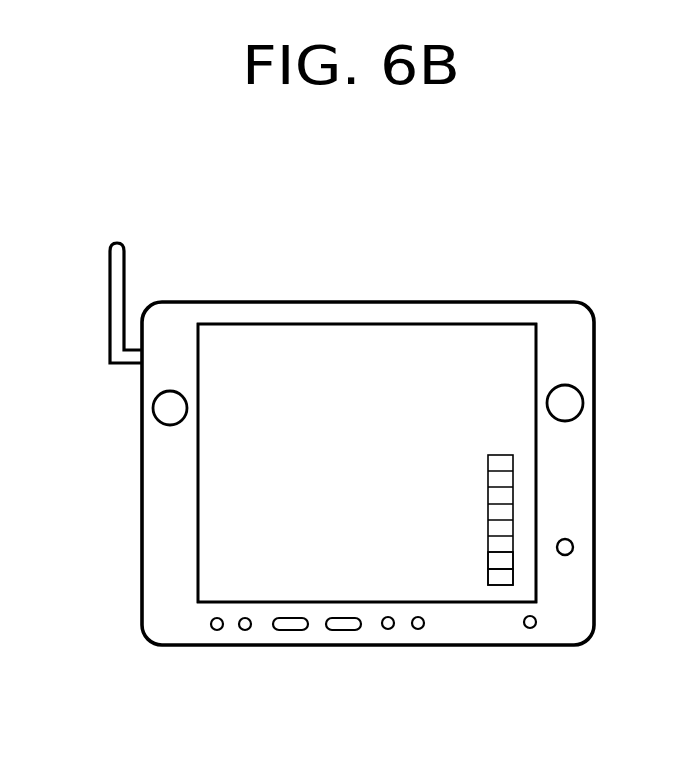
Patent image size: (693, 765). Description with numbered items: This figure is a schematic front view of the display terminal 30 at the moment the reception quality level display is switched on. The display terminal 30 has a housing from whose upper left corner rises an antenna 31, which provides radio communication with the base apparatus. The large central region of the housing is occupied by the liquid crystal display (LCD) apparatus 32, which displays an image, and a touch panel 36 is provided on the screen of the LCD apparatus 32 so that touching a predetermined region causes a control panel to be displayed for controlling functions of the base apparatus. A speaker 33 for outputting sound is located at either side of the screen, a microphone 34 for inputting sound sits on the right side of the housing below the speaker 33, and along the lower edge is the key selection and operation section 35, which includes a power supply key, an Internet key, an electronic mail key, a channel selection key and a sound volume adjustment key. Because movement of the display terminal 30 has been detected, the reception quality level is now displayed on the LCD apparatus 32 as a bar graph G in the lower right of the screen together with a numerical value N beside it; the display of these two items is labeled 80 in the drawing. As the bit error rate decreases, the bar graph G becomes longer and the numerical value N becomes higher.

The display terminal 30 is at (428, 274).
The antenna 31 is at (125, 268).
The liquid crystal display (LCD) apparatus 32 is at (306, 323).
The speaker 33 is at (152, 408).
The microphone 34 is at (574, 545).
The key selection and operation section 35 is at (246, 631).
The touch panel 36 is at (210, 549).
The bar gauge display 80 is at (486, 523).
The numerical value N is at (473, 590).
The bar graph G is at (502, 586).